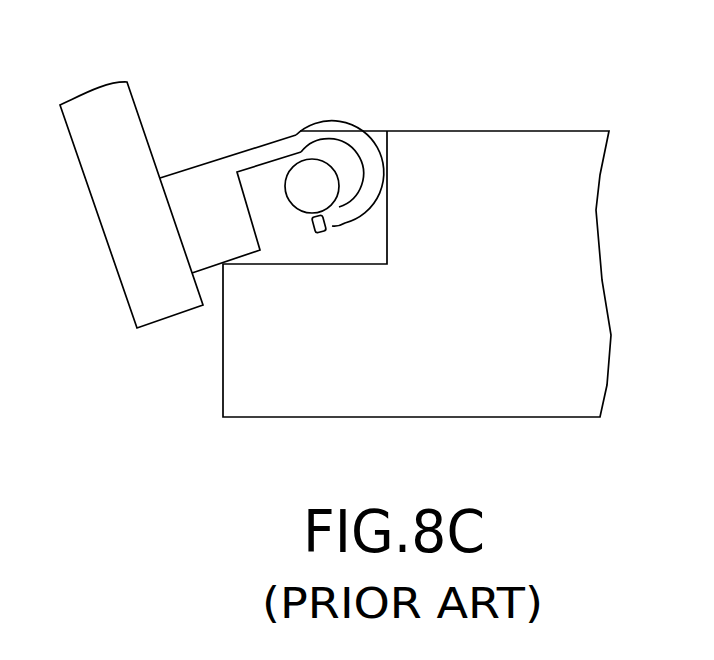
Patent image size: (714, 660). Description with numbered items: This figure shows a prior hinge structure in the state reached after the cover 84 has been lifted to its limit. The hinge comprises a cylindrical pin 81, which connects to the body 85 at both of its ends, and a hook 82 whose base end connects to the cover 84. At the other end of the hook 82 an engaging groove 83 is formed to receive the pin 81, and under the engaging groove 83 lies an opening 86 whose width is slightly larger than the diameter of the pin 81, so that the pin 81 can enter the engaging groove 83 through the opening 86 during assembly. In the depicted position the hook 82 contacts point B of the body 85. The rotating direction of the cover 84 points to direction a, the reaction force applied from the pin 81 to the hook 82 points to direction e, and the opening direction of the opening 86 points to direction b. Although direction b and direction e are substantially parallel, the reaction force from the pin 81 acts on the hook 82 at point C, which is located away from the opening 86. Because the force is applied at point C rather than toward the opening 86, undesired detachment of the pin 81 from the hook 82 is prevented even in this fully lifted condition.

The pin 81 is at (316, 173).
The hook 82 is at (190, 184).
The engaging groove 83 is at (273, 197).
The cover 84 is at (107, 100).
The body 85 is at (542, 145).
The opening 86 is at (302, 232).
The rotating direction of the cover a is at (160, 332).
The opening direction of the opening b is at (290, 238).
The reaction force direction e is at (312, 188).
The point B is at (239, 288).
The point C is at (336, 207).